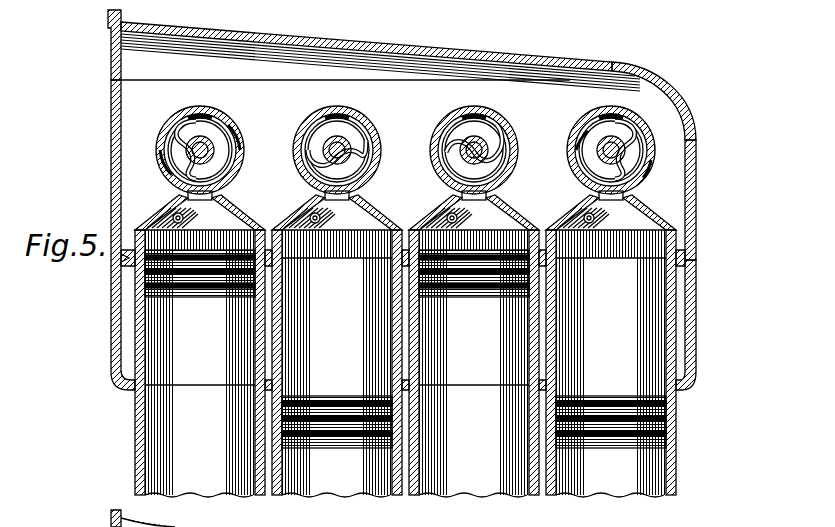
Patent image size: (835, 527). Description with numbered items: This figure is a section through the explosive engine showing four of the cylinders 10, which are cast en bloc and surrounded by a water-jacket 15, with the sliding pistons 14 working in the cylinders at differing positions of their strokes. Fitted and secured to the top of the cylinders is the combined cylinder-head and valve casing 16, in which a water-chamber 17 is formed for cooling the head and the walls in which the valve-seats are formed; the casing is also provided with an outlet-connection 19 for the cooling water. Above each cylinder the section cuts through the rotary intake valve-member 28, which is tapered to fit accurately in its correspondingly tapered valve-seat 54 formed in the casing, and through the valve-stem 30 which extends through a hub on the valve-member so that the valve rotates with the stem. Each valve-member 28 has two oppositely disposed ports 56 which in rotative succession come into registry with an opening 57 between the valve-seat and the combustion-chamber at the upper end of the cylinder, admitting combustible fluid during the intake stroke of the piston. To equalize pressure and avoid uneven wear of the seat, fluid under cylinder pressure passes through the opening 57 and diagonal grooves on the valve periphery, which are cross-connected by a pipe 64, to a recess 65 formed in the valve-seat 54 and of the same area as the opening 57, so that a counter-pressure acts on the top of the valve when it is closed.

The cylinders 10 is at (405, 346).
The sliding pistons 14 is at (405, 355).
The water-jacket 15 is at (127, 330).
The combined cylinder-head and valve casing 16 is at (697, 125).
The water-chamber 17 is at (681, 160).
The outlet-connection 19 is at (120, 61).
The intake valve-member 28 is at (165, 140).
The valve-stem 30 is at (216, 158).
The valve-seat 54 is at (247, 150).
The ports 56 is at (240, 137).
The opening 57 is at (201, 200).
The pipe 64 is at (222, 130).
The recess 65 is at (202, 111).